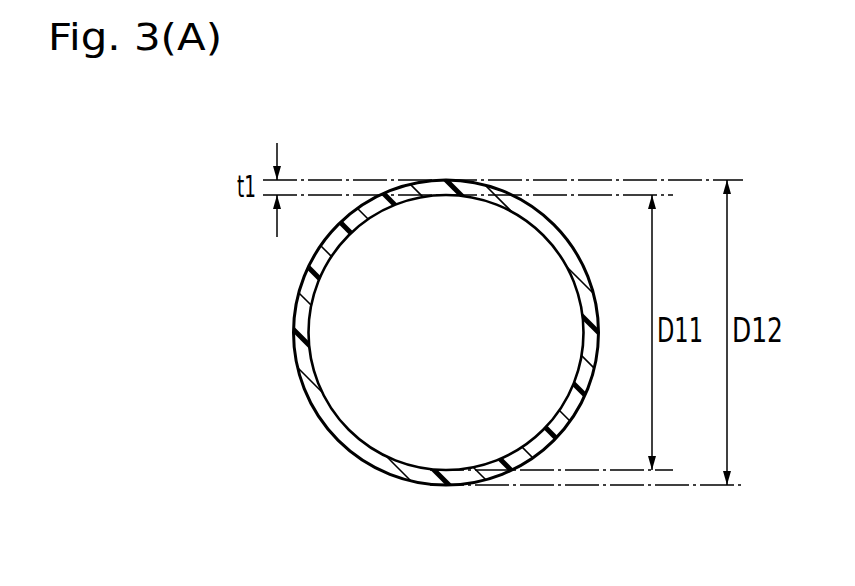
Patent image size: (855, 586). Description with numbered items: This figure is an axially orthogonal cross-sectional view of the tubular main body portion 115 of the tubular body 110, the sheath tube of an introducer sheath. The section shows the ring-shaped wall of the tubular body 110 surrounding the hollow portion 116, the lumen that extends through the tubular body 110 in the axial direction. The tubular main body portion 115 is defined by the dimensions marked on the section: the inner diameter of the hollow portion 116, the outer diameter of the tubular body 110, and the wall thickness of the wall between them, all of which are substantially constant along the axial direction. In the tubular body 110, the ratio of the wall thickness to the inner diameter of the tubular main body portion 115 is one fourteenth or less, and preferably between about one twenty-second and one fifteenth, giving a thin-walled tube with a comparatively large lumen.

The tubular body 110 is at (205, 124).
The tubular main body portion 115 is at (312, 282).
The hollow portion 116 is at (330, 323).